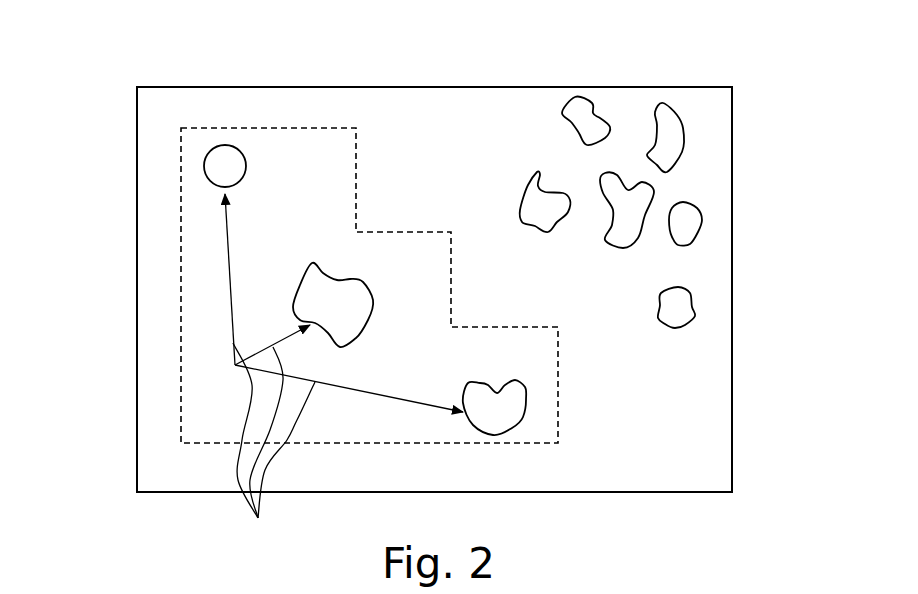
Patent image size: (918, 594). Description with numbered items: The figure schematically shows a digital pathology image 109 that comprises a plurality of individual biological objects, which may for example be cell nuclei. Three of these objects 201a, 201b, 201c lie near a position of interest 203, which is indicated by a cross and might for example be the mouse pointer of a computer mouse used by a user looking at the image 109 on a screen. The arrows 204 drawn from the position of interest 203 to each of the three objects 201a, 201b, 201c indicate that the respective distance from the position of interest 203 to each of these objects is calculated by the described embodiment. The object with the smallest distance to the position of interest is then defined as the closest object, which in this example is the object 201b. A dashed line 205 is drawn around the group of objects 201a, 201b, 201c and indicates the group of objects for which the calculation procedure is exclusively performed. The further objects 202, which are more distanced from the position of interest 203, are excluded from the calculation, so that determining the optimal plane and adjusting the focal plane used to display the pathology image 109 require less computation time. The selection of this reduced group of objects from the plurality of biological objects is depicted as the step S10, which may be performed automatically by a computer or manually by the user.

The digital pathology image 109 is at (698, 87).
The object 201a is at (223, 153).
The object 201b is at (330, 292).
The object 201c is at (503, 412).
The objects 202 is at (578, 97).
The position of interest 203 is at (235, 365).
The arrows 204 is at (274, 447).
The dashed line 205 is at (181, 280).
The step of selecting a group of objects S10 is at (178, 356).